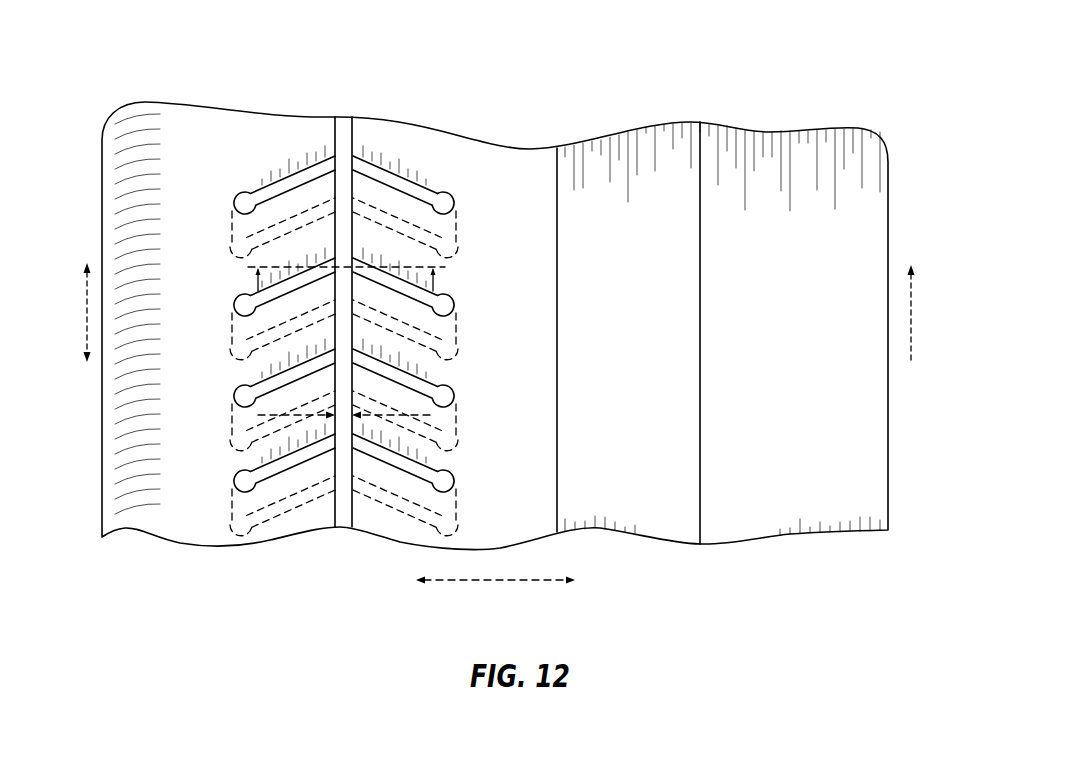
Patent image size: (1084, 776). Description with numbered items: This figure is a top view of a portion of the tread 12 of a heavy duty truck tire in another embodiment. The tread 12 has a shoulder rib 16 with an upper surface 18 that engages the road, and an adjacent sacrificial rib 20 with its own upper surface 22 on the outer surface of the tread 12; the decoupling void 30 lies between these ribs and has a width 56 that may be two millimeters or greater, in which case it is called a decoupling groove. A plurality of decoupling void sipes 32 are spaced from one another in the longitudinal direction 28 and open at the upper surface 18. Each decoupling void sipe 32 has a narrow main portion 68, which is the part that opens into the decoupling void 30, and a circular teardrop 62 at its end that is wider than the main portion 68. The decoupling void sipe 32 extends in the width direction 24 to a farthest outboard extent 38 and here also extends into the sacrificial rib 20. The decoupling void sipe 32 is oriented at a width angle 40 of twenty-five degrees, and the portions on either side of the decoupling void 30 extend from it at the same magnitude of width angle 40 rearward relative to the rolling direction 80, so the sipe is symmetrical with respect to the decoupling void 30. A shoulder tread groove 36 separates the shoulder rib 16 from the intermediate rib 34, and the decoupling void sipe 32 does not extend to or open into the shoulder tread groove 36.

The tread 12 is at (884, 33).
The shoulder rib 16 is at (447, 143).
The upper surface 18 is at (531, 160).
The sacrificial rib 20 is at (283, 118).
The upper surface 22 is at (203, 118).
The width direction 24 is at (474, 582).
The longitudinal direction 28 is at (86, 320).
The decoupling void 30 is at (343, 117).
The decoupling void sipe 32 is at (279, 190).
The intermediate rib 34 is at (763, 152).
The shoulder tread groove 36 is at (648, 152).
The farthest outboard extent 38 is at (240, 397).
The width angle 40 is at (253, 289).
The width 56 is at (388, 418).
The teardrop 62 is at (423, 191).
The main portion 68 is at (388, 178).
The rolling direction 80 is at (912, 320).